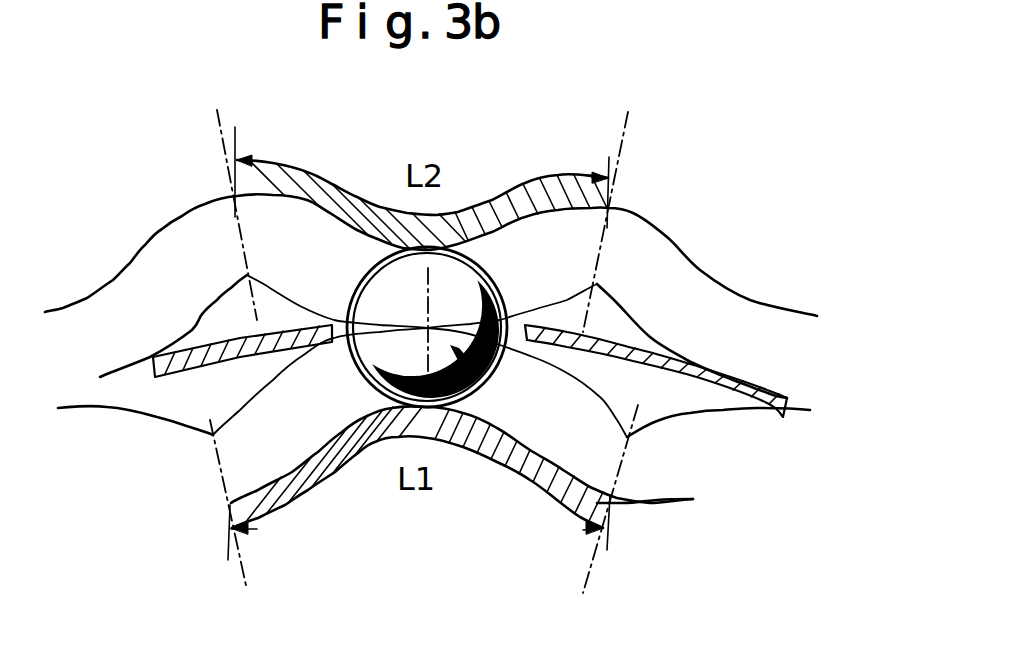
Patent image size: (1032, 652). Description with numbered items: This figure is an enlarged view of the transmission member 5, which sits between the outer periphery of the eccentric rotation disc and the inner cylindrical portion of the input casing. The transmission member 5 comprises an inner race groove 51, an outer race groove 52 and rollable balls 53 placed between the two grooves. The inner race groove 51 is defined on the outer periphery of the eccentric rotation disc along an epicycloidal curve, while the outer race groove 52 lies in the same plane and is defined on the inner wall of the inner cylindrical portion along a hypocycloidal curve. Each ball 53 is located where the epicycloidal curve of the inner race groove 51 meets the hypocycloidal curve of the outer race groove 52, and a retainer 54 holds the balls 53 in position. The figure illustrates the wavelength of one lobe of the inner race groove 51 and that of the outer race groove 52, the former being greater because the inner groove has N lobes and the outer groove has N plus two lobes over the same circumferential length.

The transmission member 5 is at (580, 101).
The inner race groove 51 is at (607, 477).
The outer race groove 52 is at (650, 214).
The rollable balls 53 is at (403, 362).
The retainer 54 is at (745, 380).